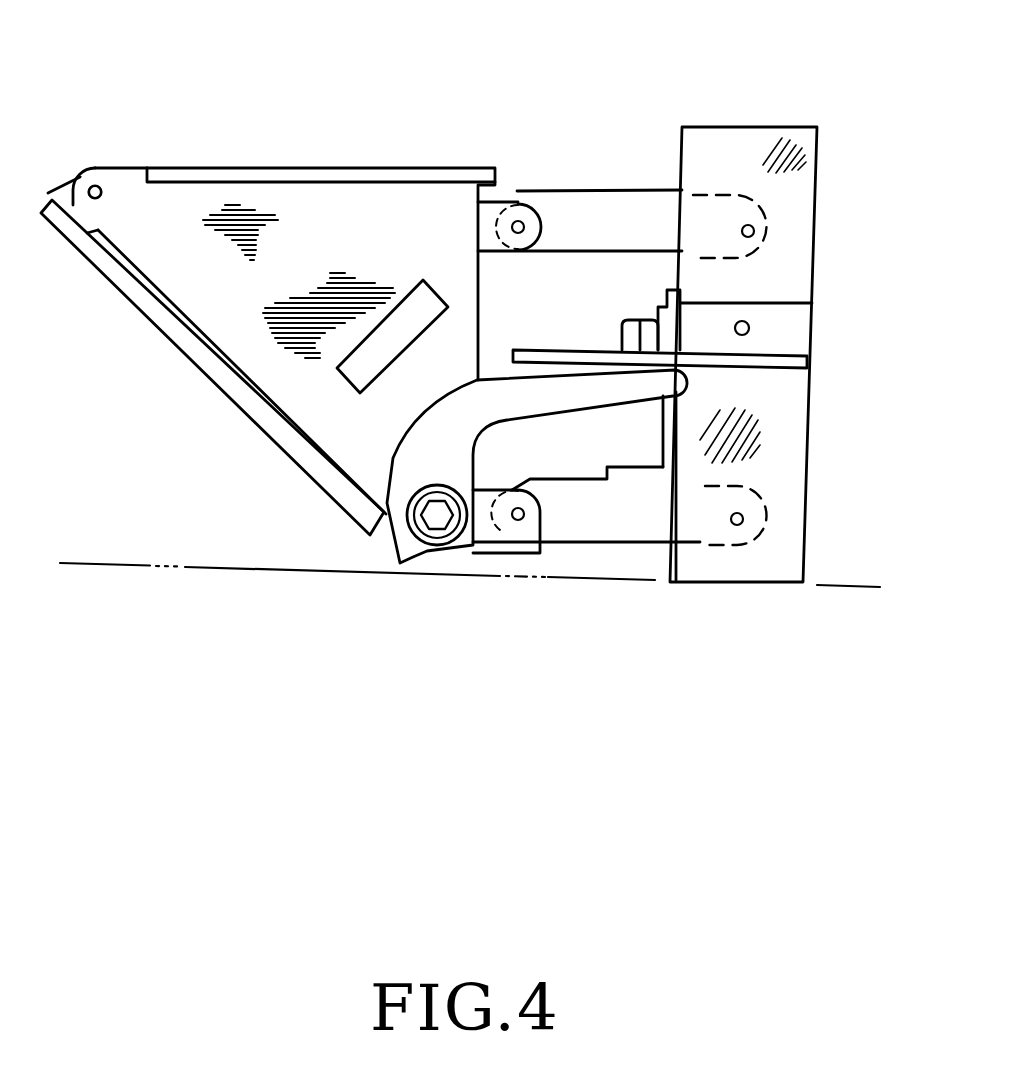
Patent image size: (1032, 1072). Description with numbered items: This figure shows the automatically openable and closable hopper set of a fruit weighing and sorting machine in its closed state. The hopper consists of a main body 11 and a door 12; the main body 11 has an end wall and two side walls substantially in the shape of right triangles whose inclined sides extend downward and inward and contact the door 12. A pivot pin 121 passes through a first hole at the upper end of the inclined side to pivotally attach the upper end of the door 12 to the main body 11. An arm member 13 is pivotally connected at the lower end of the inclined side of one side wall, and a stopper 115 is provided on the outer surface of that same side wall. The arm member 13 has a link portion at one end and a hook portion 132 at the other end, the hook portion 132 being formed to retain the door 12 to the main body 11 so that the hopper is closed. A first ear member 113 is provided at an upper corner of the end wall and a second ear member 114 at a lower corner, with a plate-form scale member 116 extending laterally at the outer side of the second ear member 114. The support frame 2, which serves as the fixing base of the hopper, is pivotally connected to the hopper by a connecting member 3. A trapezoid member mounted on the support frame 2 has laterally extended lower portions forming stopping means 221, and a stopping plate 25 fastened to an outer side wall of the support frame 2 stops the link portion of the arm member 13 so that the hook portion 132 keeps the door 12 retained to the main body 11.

The support frame 2 is at (752, 150).
The connecting member 3 is at (610, 208).
The main body 11 is at (318, 208).
The door 12 is at (182, 338).
The arm member 13 is at (420, 457).
The stopping plate 25 is at (700, 365).
The first ear member 113 is at (515, 212).
The second ear member 114 is at (486, 522).
The stopper 115 is at (360, 365).
The scale member 116 is at (535, 555).
The pivot pin 121 is at (80, 186).
The hook portion 132 is at (393, 543).
The stopping means 221 is at (640, 478).